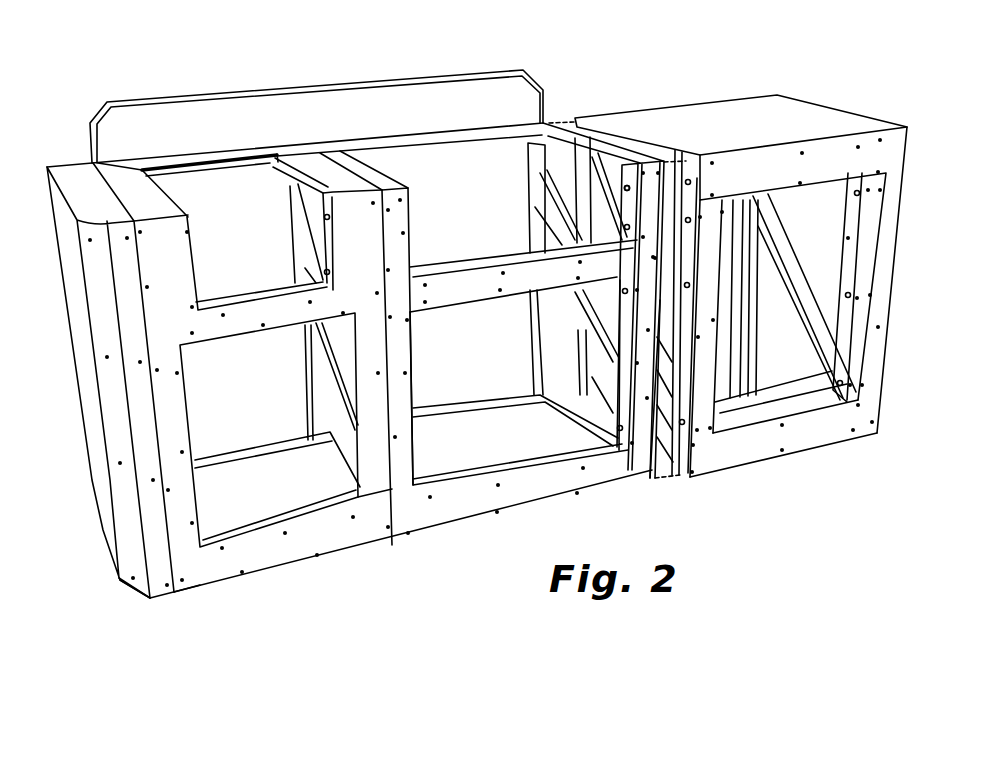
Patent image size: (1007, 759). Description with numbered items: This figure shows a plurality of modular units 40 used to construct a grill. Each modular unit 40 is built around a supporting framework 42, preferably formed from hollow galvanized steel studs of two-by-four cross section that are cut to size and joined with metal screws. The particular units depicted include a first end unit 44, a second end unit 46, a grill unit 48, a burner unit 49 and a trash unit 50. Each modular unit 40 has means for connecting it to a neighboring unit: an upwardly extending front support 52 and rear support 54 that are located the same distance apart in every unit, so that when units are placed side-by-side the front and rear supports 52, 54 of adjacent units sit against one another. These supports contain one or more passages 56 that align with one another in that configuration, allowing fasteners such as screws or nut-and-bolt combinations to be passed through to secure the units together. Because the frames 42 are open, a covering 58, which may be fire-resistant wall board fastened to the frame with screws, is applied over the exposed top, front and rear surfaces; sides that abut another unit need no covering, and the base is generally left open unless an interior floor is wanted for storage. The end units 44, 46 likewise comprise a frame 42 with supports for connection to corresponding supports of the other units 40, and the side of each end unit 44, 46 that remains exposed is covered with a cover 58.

The modular unit 40 is at (700, 88).
The supporting framework 42 is at (448, 192).
The first end unit 44 is at (65, 145).
The second end unit 46 is at (835, 90).
The grill unit 48 is at (427, 552).
The burner unit 49 is at (292, 580).
The trash unit 50 is at (792, 470).
The front support 52 is at (167, 515).
The rear support 54 is at (532, 182).
The passage 56 is at (623, 186).
The covering 58 is at (157, 315).